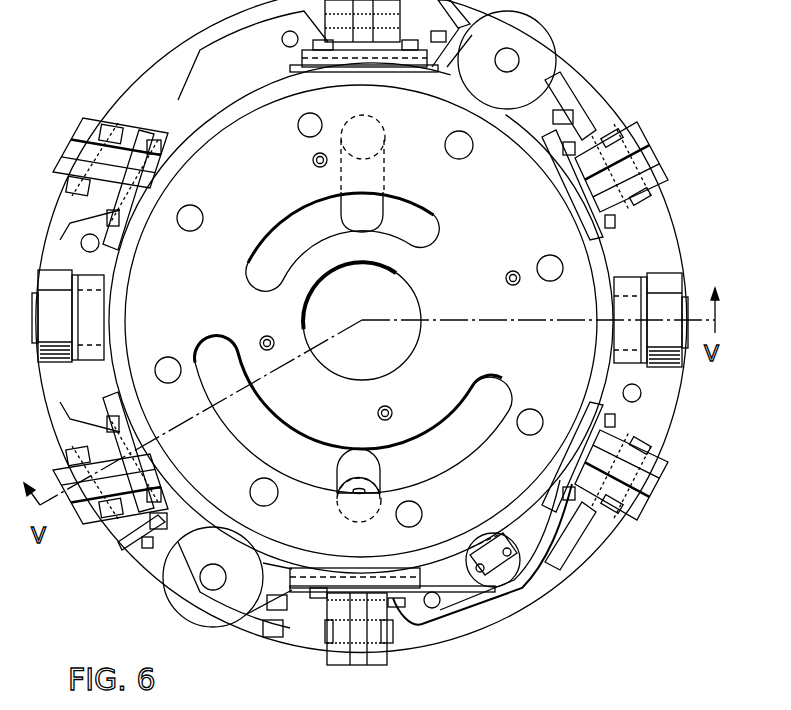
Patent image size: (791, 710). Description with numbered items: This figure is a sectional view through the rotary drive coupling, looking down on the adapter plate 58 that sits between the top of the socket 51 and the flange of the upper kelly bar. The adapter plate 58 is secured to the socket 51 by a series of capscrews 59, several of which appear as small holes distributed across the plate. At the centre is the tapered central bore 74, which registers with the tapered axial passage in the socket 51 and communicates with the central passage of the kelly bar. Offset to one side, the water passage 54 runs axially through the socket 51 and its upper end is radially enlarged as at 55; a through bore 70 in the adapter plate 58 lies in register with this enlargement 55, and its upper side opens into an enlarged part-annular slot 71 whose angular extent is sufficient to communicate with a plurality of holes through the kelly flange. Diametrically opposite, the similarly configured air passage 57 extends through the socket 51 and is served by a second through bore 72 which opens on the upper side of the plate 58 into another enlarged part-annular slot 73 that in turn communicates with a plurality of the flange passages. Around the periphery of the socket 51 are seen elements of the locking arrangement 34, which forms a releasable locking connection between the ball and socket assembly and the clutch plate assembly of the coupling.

The locking arrangement 34 is at (100, 512).
The socket 51 is at (108, 372).
The water passage 54 is at (340, 508).
The radially enlarged upper end of water passage 55 is at (375, 471).
The air passage 57 is at (386, 127).
The adapter plate 58 is at (427, 308).
The capscrews 59 is at (513, 271).
The through bore 70 is at (355, 456).
The part-annular slot 71 is at (266, 427).
The through bore 72 is at (373, 208).
The part-annular slot 73 is at (428, 224).
The tapered central bore 74 is at (396, 273).